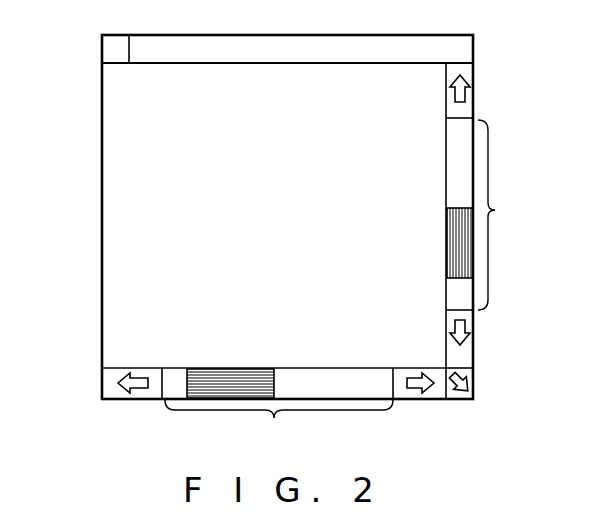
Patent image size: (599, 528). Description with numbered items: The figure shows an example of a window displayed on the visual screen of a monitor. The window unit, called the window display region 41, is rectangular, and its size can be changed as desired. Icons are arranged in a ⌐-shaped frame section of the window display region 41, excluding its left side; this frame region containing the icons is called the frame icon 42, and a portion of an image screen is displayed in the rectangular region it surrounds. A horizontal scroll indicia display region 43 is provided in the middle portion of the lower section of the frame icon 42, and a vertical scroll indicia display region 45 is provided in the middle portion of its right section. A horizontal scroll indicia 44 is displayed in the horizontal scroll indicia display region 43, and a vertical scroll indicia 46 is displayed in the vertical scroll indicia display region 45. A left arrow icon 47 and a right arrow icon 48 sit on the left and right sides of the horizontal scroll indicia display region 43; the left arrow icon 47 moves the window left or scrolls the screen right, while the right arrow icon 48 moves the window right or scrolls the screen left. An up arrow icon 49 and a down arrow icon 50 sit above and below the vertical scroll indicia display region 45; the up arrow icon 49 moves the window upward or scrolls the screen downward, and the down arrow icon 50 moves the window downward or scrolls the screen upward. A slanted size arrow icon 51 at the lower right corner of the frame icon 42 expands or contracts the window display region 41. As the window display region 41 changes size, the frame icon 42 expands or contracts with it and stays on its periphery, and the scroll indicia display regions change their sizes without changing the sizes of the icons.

The window display region 41 is at (56, 181).
The frame icon 42 is at (476, 69).
The horizontal scroll indicia display region 43 is at (276, 420).
The horizontal scroll indicia 44 is at (247, 369).
The vertical scroll indicia display region 45 is at (499, 210).
The vertical scroll indicia 46 is at (447, 244).
The left arrow icon 47 is at (110, 376).
The right arrow icon 48 is at (437, 398).
The up arrow icon 49 is at (468, 104).
The down arrow icon 50 is at (467, 356).
The size arrow icon 51 is at (475, 390).